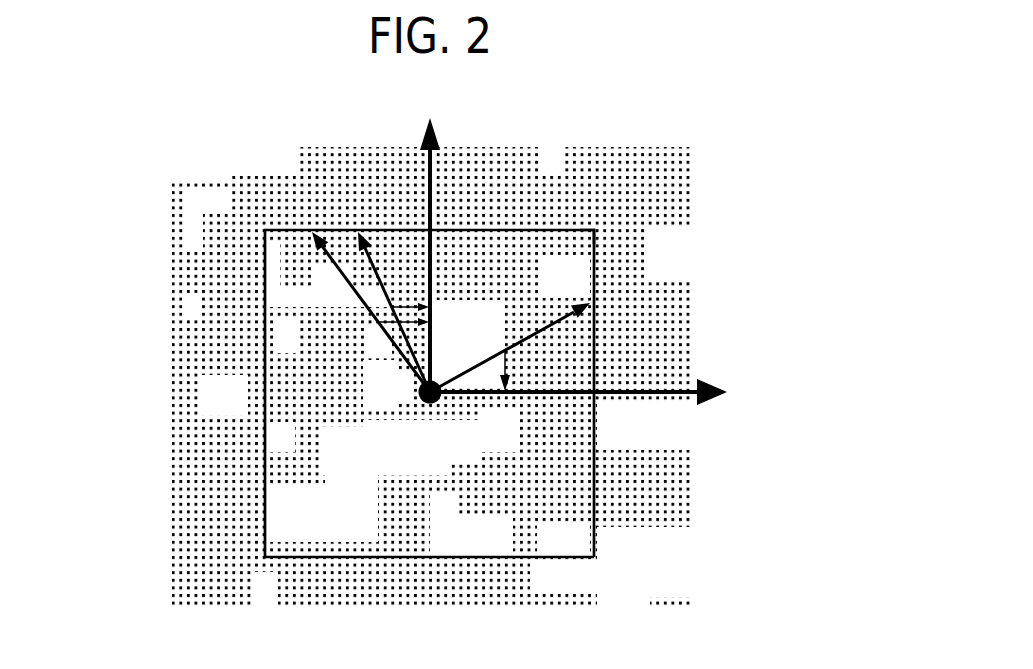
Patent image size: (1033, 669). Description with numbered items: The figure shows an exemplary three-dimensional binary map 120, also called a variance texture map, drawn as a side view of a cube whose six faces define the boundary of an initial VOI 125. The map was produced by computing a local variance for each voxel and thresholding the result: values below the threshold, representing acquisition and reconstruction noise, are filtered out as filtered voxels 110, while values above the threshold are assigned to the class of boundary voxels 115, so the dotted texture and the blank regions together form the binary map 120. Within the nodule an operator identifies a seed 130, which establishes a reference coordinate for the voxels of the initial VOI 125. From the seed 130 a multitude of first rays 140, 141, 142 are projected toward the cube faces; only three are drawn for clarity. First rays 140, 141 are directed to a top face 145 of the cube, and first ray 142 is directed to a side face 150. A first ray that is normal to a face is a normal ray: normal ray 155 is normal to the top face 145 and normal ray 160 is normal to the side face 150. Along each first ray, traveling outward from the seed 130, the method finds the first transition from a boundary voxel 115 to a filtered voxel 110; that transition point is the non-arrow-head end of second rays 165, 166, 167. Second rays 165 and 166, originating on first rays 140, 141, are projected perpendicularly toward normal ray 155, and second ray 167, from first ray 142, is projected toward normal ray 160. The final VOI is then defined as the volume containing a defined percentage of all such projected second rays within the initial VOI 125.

The filtered voxels 110 is at (712, 356).
The boundary voxels 115 is at (697, 250).
The binary map 120 is at (515, 328).
The initial VOI 125 is at (405, 584).
The seed 130 is at (422, 400).
The first ray 140 is at (346, 255).
The first ray 141 is at (353, 286).
The first ray 142 is at (477, 366).
The top face 145 is at (592, 208).
The side face 150 is at (524, 371).
The normal ray 155 is at (434, 160).
The normal ray 160 is at (677, 394).
The second ray 165 is at (378, 364).
The second ray 166 is at (396, 315).
The second ray 167 is at (508, 358).